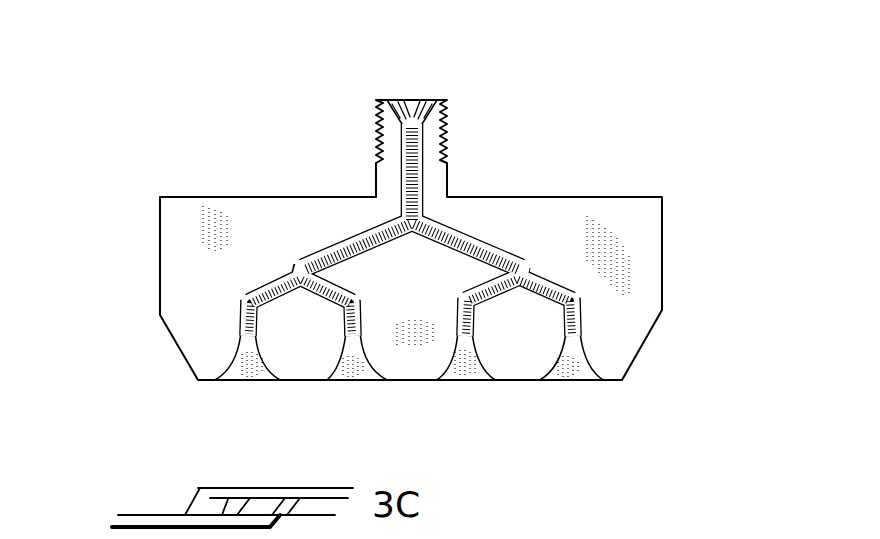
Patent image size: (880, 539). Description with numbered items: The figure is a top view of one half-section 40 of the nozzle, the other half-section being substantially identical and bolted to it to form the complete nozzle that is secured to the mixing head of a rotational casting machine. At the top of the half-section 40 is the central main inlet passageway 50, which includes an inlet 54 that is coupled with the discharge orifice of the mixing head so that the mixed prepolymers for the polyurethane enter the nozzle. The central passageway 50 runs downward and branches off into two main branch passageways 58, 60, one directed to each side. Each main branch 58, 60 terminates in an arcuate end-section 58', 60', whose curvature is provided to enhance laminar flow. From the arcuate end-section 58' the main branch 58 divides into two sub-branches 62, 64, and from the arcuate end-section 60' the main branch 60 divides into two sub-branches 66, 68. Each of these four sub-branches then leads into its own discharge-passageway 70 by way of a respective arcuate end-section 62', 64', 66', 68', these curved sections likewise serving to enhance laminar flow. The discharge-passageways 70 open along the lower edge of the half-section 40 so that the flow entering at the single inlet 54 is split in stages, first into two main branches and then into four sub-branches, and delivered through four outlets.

The half-section 40 is at (705, 112).
The central main inlet passageway 50 is at (422, 177).
The inlet 54 is at (412, 98).
The main branch passageway 58 is at (475, 199).
The arcuate end-section 58' is at (562, 199).
The main branch passageway 60 is at (326, 182).
The arcuate end-section 60' is at (244, 194).
The sub-branch 62 is at (581, 220).
The arcuate end-section 62' is at (657, 301).
The sub-branch 64 is at (497, 366).
The arcuate end-section 64' is at (460, 377).
The sub-branch 66 is at (328, 188).
The arcuate end-section 66' is at (348, 367).
The sub-branch 68 is at (202, 205).
The arcuate end-section 68' is at (147, 319).
The discharge-passageway 70 is at (242, 368).